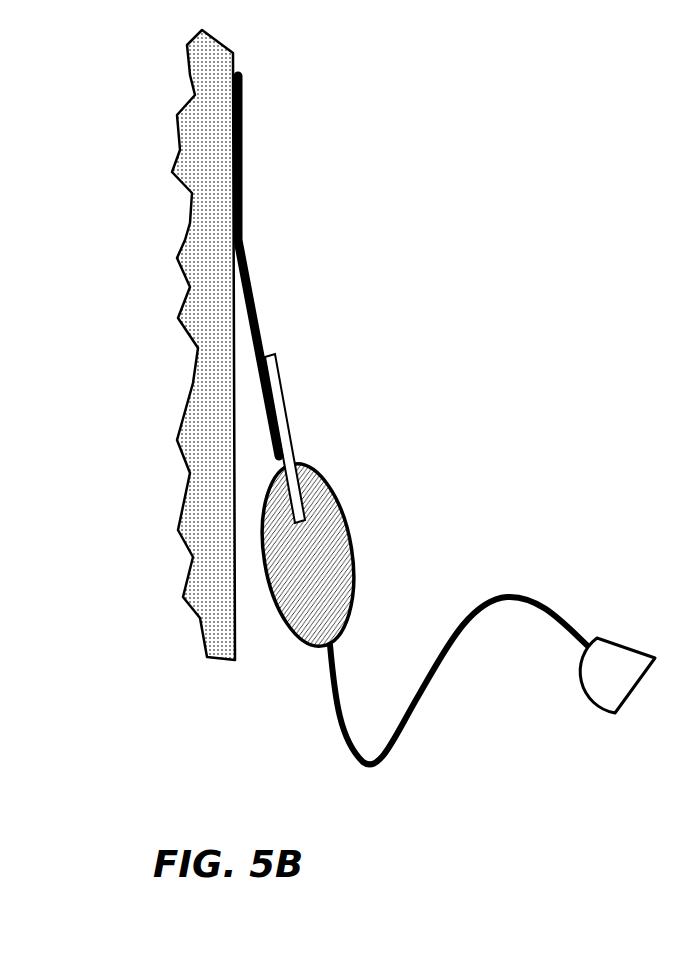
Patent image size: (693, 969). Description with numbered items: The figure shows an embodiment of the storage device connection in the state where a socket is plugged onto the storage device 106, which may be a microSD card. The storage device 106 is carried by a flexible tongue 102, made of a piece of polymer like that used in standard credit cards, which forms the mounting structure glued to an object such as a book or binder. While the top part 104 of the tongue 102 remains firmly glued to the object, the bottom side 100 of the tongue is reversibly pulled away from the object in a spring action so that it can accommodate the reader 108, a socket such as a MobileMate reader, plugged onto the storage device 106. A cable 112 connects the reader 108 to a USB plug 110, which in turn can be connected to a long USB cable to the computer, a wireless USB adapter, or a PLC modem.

The bottom side of the tongue 100 is at (258, 390).
The tongue 102 is at (404, 364).
The top part of the tongue 104 is at (242, 167).
The storage device 106 is at (283, 373).
The reader 108 is at (338, 495).
The USB plug 110 is at (617, 633).
The cable 112 is at (347, 740).